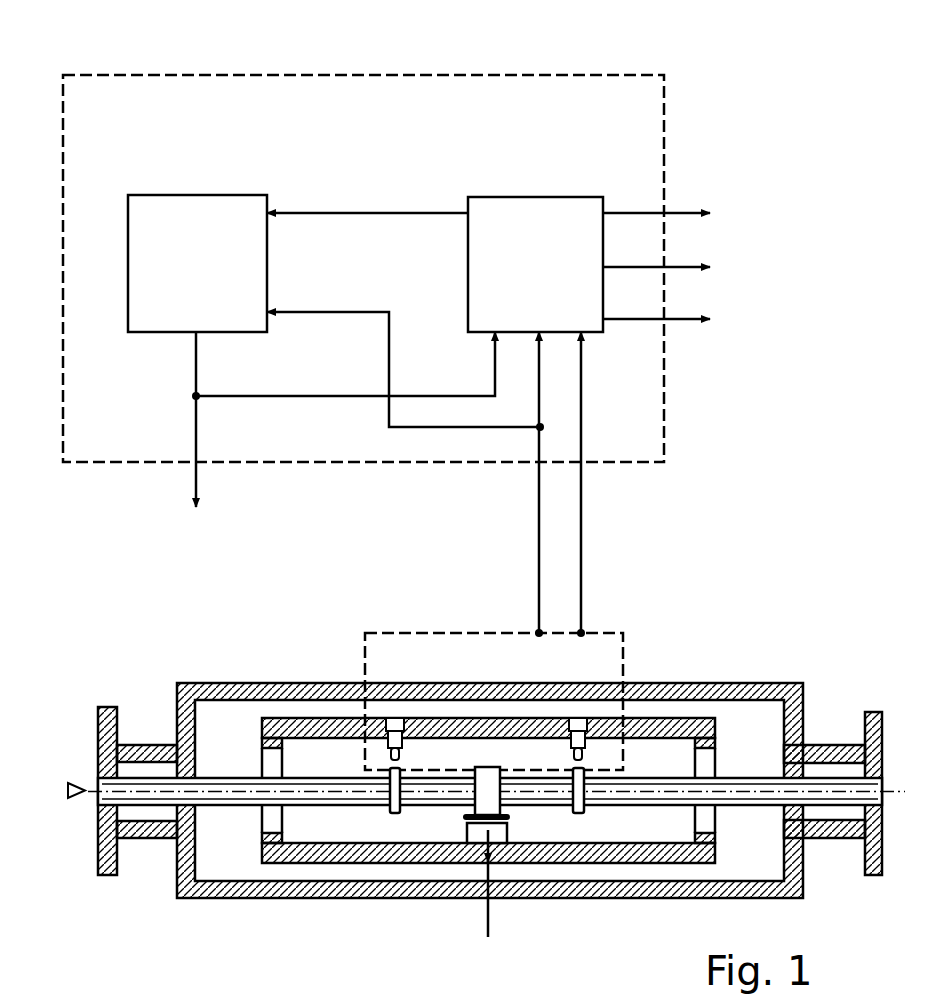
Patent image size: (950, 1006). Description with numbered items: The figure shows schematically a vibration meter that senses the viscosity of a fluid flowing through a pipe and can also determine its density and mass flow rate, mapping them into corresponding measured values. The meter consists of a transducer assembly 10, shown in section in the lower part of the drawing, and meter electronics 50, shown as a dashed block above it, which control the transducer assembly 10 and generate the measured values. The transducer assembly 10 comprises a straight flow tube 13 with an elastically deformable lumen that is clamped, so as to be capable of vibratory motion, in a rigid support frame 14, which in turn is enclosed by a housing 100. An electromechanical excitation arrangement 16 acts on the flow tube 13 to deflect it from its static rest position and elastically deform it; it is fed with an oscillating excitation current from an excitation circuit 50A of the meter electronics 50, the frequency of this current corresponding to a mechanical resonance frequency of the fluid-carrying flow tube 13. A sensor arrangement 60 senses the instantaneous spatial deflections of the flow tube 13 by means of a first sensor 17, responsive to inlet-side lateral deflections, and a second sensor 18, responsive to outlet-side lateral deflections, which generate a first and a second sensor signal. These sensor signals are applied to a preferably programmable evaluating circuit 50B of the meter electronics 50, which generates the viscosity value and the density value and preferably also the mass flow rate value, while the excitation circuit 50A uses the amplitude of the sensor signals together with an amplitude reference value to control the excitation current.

The transducer assembly 10 is at (291, 677).
The housing 100 is at (220, 686).
The flow tube 13 is at (207, 776).
The support frame 14 is at (313, 864).
The excitation arrangement 16 is at (508, 820).
The first sensor 17 is at (396, 717).
The second sensor 18 is at (582, 717).
The meter electronics 50 is at (307, 83).
The excitation circuit 50A is at (212, 195).
The evaluating circuit 50B is at (549, 197).
The sensor arrangement 60 is at (623, 641).